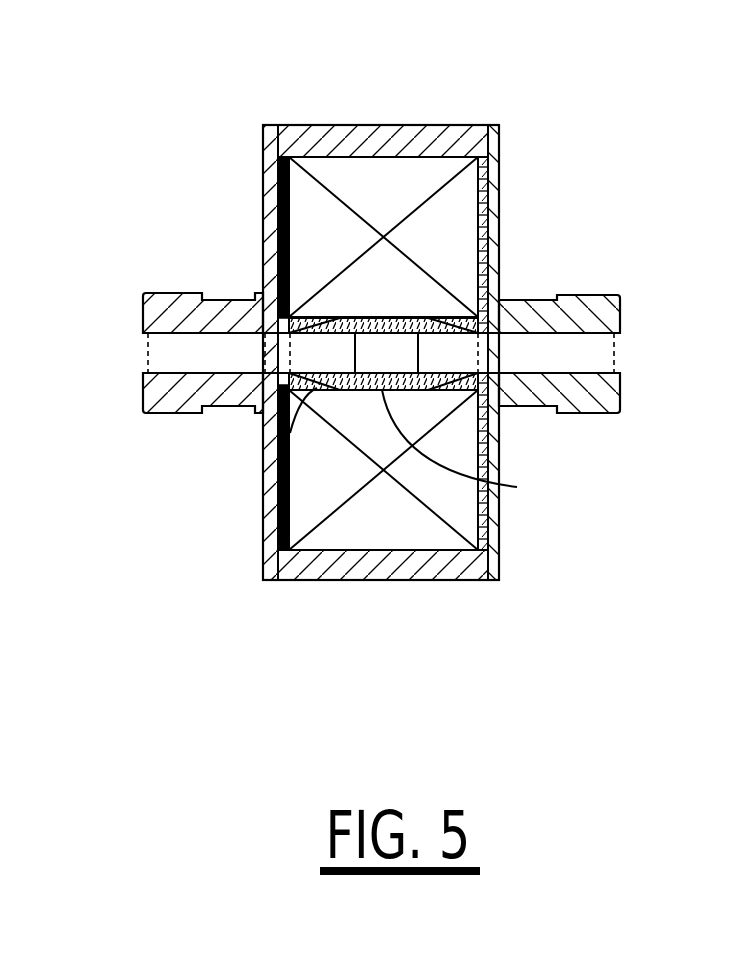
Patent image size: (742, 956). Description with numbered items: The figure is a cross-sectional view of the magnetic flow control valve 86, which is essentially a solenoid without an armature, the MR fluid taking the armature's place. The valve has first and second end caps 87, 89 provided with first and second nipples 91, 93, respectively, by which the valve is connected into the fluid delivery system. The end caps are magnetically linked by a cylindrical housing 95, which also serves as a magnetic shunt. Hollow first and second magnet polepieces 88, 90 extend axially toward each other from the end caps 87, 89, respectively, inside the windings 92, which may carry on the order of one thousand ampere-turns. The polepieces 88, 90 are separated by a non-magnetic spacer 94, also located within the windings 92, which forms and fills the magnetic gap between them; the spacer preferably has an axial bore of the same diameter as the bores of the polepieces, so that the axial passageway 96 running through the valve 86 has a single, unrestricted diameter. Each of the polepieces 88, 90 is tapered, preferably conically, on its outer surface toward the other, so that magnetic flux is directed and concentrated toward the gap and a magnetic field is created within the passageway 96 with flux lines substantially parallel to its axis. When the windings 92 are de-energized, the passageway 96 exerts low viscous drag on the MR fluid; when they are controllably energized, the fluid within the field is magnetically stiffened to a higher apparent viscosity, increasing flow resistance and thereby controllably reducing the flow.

The magnetic flow control valve 86 is at (582, 119).
The first end cap 87 is at (493, 220).
The first magnet polepiece 88 is at (455, 388).
The second end cap 89 is at (273, 223).
The second magnet polepiece 90 is at (282, 436).
The first nipple 91 is at (618, 312).
The windings 92 is at (343, 177).
The second nipple 93 is at (140, 298).
The non-magnetic spacer 94 is at (472, 450).
The cylindrical housing 95 is at (383, 133).
The axial passageway 96 is at (590, 355).